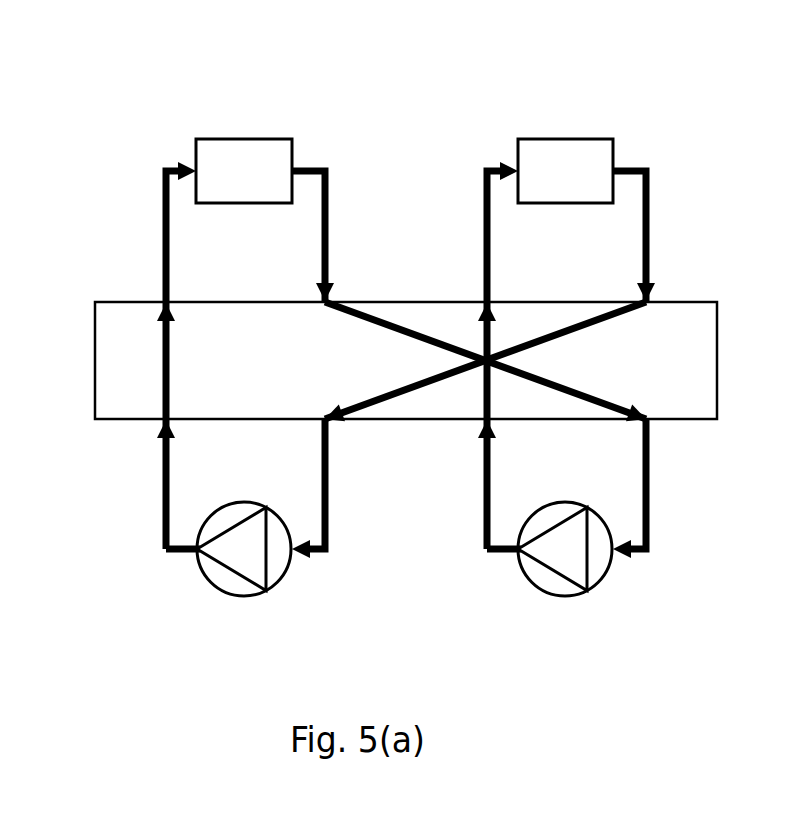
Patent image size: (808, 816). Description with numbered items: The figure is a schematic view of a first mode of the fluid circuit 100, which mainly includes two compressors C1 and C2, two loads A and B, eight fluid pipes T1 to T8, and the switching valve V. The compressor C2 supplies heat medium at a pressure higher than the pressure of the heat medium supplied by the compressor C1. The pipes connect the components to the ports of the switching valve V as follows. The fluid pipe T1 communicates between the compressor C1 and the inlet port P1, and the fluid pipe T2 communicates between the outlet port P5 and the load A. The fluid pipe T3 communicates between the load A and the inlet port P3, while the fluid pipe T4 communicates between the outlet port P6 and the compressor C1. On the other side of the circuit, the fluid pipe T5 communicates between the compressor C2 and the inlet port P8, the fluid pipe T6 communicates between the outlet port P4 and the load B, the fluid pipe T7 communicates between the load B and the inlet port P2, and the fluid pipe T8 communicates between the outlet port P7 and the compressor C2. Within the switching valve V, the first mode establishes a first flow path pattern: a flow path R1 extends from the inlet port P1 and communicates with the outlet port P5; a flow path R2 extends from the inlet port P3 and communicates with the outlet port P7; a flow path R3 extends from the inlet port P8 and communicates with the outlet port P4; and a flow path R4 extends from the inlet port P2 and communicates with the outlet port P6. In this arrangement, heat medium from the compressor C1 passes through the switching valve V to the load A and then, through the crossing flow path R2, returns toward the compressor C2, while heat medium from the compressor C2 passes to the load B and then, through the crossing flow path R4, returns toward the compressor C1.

The fluid circuit 100 is at (428, 110).
The switching valve V is at (723, 345).
The load A is at (244, 171).
The load B is at (565, 171).
The compressor C1 is at (240, 598).
The compressor C2 is at (562, 598).
The fluid pipe T1 is at (162, 510).
The fluid pipe T2 is at (162, 235).
The fluid pipe T3 is at (329, 235).
The fluid pipe T4 is at (330, 510).
The fluid pipe T5 is at (482, 503).
The fluid pipe T6 is at (483, 227).
The fluid pipe T7 is at (652, 227).
The fluid pipe T8 is at (652, 502).
The flow path R1 is at (172, 405).
The flow path R2 is at (392, 328).
The flow path R3 is at (492, 408).
The flow path R4 is at (568, 332).
The inlet port P1 is at (145, 437).
The inlet port P2 is at (666, 285).
The inlet port P3 is at (344, 285).
The outlet port P4 is at (469, 295).
The outlet port P5 is at (145, 295).
The outlet port P6 is at (349, 429).
The outlet port P7 is at (659, 429).
The inlet port P8 is at (464, 437).